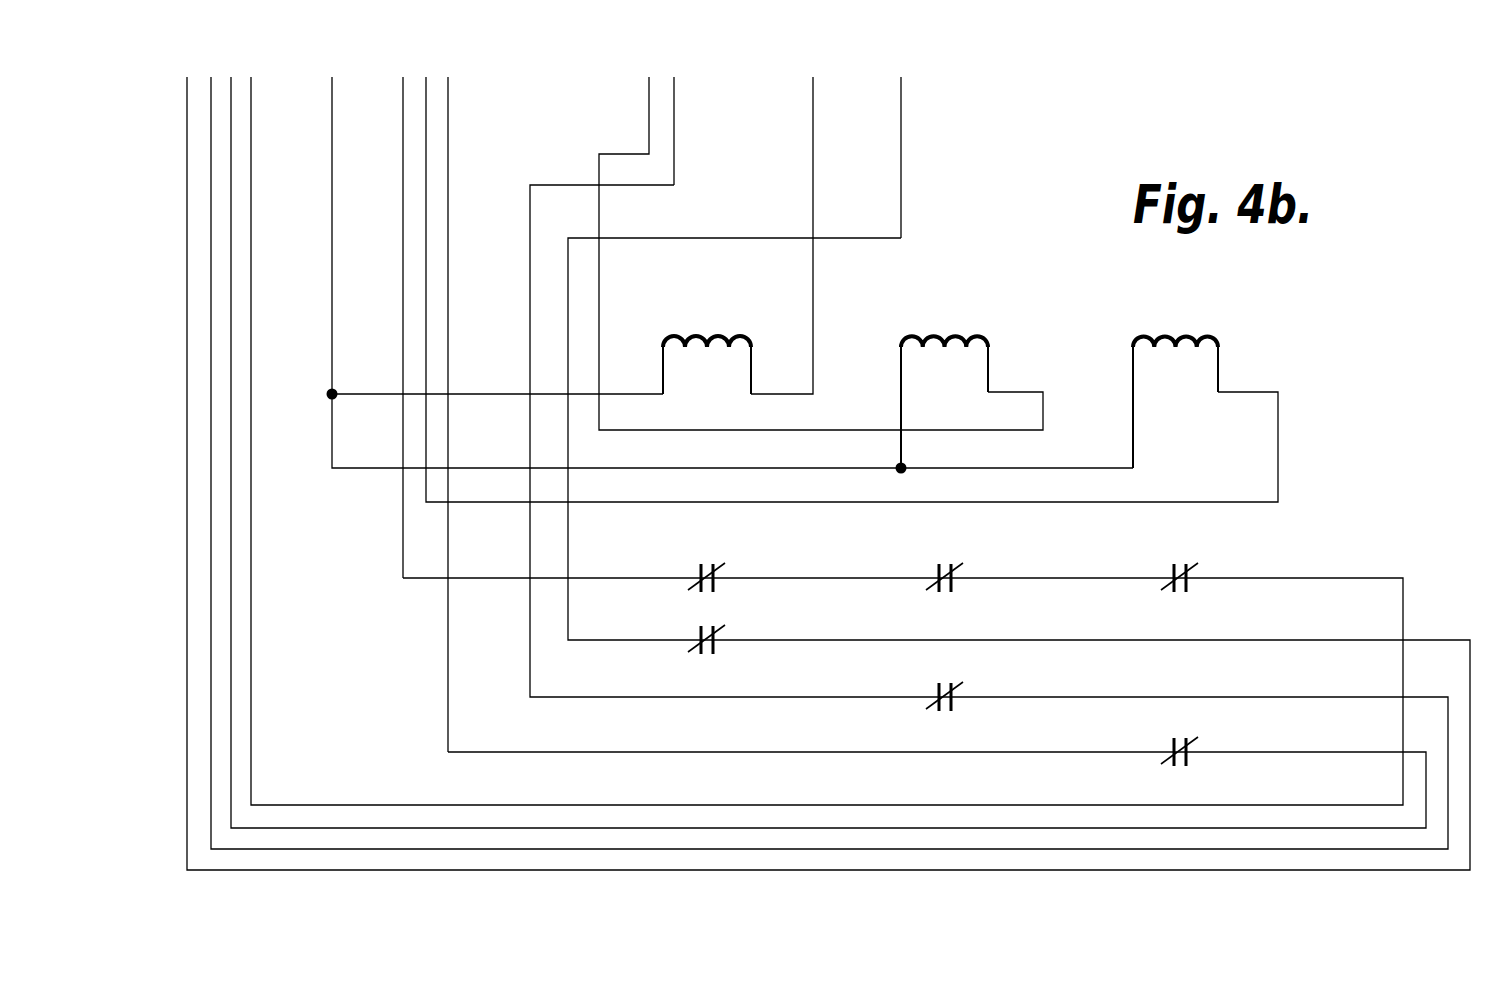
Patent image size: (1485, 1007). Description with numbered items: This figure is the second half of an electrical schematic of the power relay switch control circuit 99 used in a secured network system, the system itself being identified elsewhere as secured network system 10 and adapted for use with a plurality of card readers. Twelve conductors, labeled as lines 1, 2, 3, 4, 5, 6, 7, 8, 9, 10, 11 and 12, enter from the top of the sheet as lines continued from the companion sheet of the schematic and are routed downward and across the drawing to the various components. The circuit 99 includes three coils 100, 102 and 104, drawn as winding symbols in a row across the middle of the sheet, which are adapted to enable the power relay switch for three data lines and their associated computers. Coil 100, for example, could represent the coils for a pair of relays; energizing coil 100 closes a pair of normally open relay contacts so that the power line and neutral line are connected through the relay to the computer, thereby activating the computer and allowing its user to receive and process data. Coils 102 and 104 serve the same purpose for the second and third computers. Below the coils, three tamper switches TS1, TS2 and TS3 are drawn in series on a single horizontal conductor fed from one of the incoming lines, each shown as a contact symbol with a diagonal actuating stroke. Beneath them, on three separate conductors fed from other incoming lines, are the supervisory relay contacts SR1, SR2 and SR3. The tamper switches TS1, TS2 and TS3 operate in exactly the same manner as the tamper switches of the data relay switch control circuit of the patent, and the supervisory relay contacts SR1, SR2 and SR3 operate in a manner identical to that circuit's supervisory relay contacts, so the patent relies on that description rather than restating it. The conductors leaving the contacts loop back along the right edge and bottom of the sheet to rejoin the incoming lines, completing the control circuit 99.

The normally open contact 1 is at (825, 460).
The normally open contact 2 is at (826, 450).
The line 3 from Fig. 4A 3 is at (825, 439).
The line 4 from Fig. 4A 4 is at (824, 428).
The line 5 from Fig. 4A 5 is at (729, 262).
The line 6 from Fig. 4A 6 is at (402, 314).
The line 7 from Fig. 4A 7 is at (849, 276).
The line 8 from Fig. 4A 8 is at (447, 401).
The line 9 from Fig. 4A 9 is at (821, 240).
The secured network system 10 is at (674, 118).
The line 11 from Fig. 4A 11 is at (787, 222).
The line 12 from Fig. 4A 12 is at (901, 144).
The power relay switch control circuit 99 is at (1196, 147).
The coil 100 is at (696, 337).
The coil 102 is at (936, 337).
The coil 104 is at (1163, 337).
The tamper switch TS1 is at (707, 563).
The tamper switch TS2 is at (945, 563).
The tamper switch TS3 is at (1180, 563).
The supervisory relay contact SR1 is at (707, 626).
The supervisory relay contact SR2 is at (945, 684).
The supervisory relay contact SR3 is at (1180, 738).